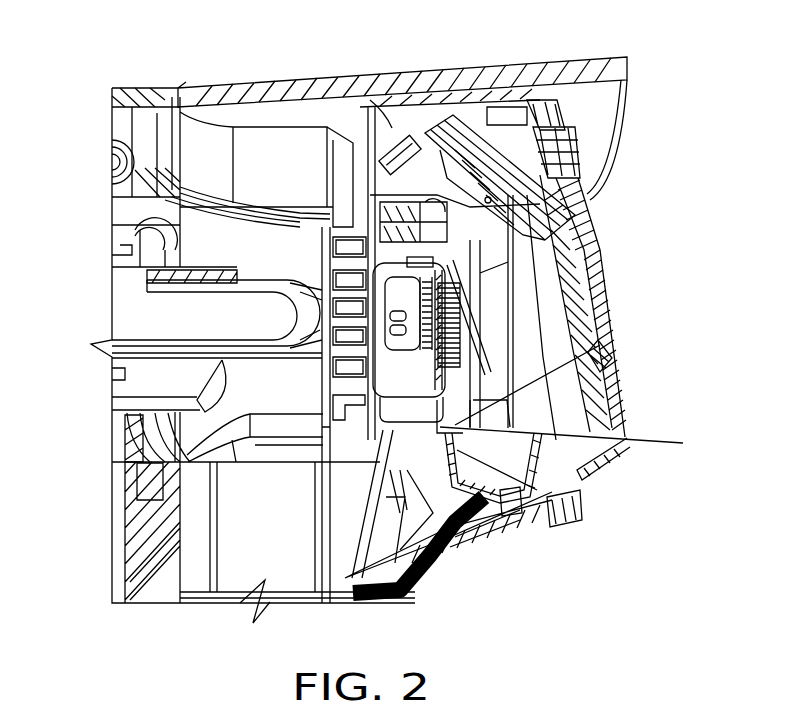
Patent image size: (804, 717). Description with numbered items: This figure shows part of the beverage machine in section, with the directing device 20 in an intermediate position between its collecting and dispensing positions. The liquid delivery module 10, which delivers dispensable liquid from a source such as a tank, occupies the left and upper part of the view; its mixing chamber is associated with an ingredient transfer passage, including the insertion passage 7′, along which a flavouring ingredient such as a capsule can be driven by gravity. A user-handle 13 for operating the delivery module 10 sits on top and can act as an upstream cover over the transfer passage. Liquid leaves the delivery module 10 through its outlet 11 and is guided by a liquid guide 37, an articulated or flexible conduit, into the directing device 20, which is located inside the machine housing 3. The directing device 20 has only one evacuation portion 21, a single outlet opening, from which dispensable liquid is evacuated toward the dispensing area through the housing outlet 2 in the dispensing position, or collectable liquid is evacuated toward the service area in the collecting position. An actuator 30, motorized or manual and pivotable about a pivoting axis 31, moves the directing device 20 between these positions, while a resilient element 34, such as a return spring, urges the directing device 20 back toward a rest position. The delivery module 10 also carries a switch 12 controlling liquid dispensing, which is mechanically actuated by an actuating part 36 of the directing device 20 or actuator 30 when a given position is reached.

The liquid delivery module 10 is at (110, 314).
The insertion passage 7′ is at (282, 140).
The user-handle 13 is at (613, 65).
The switch 12 is at (395, 130).
The actuating part 36 is at (450, 113).
The resilient element 34 is at (585, 207).
The actuator 30 is at (590, 293).
The outlet 11 is at (607, 330).
The pivoting axis 31 is at (612, 368).
The liquid guide 37 is at (576, 453).
The directing device 20 is at (523, 462).
The evacuation portion 21 is at (515, 523).
The outlet 2 is at (515, 537).
The machine housing 3 is at (413, 573).